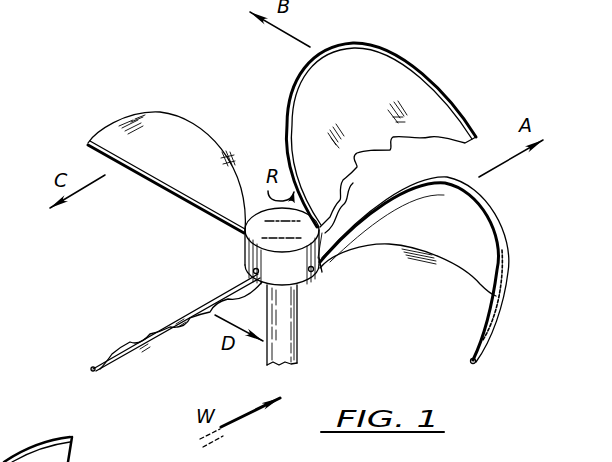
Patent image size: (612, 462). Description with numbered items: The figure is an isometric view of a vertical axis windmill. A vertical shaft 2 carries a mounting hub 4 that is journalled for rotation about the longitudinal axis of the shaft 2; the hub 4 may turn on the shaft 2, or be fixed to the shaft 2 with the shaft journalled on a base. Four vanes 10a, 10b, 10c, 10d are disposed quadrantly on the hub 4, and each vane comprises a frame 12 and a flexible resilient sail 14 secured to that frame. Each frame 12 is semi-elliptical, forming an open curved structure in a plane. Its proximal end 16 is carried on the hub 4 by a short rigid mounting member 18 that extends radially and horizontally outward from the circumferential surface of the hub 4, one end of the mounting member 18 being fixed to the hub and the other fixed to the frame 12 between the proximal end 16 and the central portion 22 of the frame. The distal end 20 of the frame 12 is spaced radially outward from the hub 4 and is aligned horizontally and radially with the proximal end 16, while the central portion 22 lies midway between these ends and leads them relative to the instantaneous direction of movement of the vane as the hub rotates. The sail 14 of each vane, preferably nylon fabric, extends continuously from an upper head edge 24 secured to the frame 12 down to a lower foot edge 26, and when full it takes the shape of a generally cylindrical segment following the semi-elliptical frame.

The vertical shaft 2 is at (278, 351).
The mounting hub 4 is at (247, 252).
The vane 10a is at (434, 263).
The vane 10b is at (371, 65).
The vane 10c is at (186, 92).
The vane 10d is at (157, 328).
The frame 12 is at (414, 185).
The sail 14 is at (387, 249).
The proximal end 16 is at (347, 198).
The mounting member 18 is at (318, 276).
The distal end 20 is at (468, 360).
The central portion 22 is at (423, 182).
The head edge 24 is at (477, 221).
The foot edge 26 is at (474, 287).